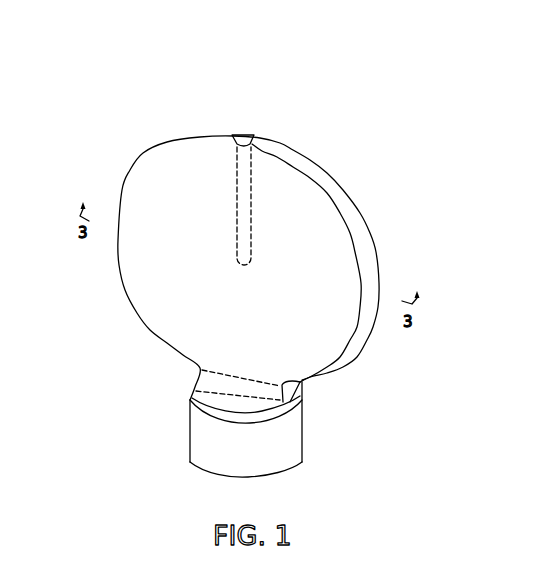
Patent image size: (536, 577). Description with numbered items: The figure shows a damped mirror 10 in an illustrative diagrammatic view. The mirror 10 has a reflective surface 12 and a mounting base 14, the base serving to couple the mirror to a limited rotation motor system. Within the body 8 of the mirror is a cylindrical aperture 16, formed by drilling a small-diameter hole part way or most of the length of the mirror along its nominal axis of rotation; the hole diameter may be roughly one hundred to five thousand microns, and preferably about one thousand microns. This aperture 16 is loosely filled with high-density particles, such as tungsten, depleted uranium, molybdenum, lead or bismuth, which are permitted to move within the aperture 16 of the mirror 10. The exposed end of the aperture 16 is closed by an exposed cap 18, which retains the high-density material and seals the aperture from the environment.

The damped mirror 10 is at (392, 145).
The body 8 is at (348, 210).
The reflective surface 12 is at (252, 307).
The mounting base 14 is at (303, 435).
The cylindrical aperture 16 is at (240, 195).
The exposed cap 18 is at (243, 133).